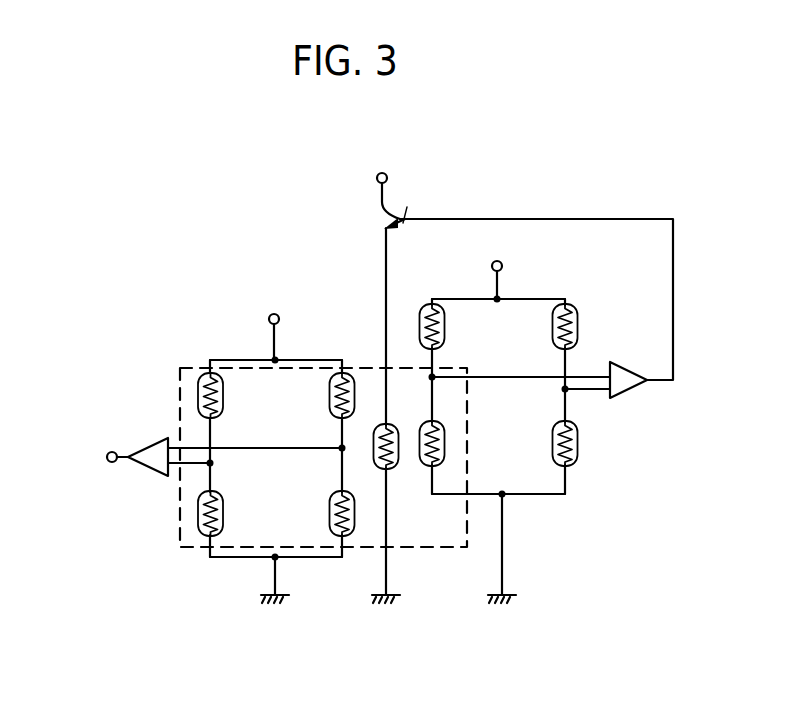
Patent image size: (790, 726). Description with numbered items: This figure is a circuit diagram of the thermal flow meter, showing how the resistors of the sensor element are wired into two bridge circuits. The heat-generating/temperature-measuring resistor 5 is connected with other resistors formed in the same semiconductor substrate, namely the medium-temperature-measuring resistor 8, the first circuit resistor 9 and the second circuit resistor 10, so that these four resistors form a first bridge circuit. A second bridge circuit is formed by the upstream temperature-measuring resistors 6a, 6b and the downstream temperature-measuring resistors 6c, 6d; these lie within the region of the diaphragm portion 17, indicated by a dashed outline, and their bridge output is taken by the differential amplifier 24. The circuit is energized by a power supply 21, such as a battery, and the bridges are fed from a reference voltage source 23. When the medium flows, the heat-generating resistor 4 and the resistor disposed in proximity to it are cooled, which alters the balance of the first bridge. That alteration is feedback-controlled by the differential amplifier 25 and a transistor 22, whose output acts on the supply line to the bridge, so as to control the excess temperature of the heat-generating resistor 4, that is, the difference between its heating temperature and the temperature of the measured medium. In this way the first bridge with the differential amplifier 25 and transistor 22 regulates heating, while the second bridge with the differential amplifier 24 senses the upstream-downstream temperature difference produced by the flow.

The heat-generating resistor 4 is at (400, 470).
The heat-generating/temperature-measuring resistor 5 is at (448, 437).
The upstream temperature-measuring resistor 6a is at (198, 388).
The upstream temperature-measuring resistor 6b is at (330, 510).
The downstream temperature-measuring resistor 6c is at (330, 388).
The downstream temperature-measuring resistor 6d is at (198, 513).
The medium-temperature-measuring resistor 8 is at (578, 447).
The first circuit resistor 9 is at (445, 326).
The second circuit resistor 10 is at (575, 307).
The region of the diaphragm portion 17 is at (368, 547).
The power supply 21 is at (388, 174).
The transistor 22 is at (407, 210).
The reference voltage source 23 is at (276, 313).
The differential amplifier 24 is at (110, 452).
The differential amplifier 25 is at (625, 368).